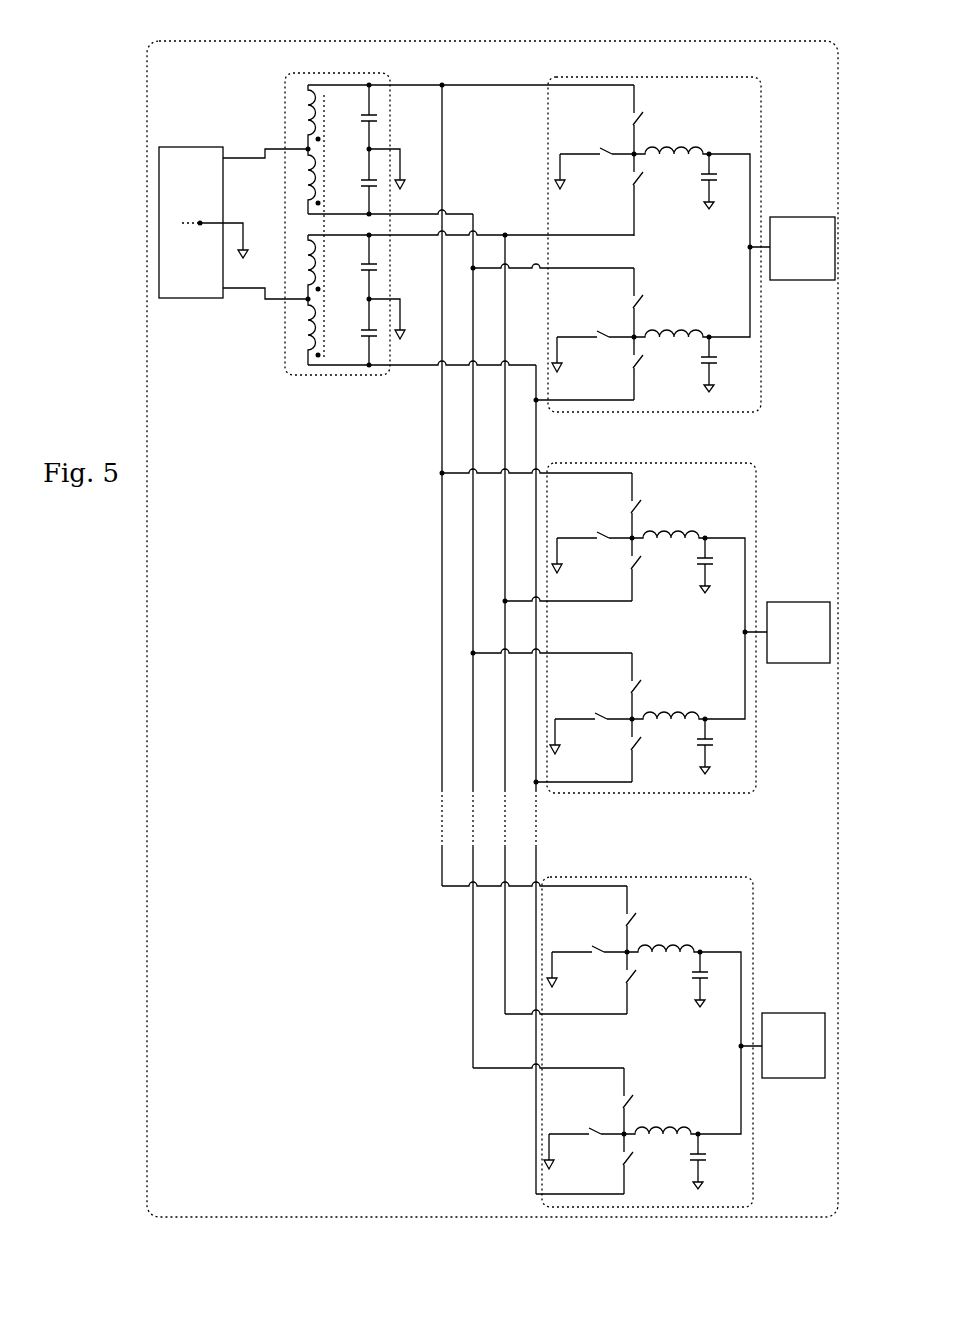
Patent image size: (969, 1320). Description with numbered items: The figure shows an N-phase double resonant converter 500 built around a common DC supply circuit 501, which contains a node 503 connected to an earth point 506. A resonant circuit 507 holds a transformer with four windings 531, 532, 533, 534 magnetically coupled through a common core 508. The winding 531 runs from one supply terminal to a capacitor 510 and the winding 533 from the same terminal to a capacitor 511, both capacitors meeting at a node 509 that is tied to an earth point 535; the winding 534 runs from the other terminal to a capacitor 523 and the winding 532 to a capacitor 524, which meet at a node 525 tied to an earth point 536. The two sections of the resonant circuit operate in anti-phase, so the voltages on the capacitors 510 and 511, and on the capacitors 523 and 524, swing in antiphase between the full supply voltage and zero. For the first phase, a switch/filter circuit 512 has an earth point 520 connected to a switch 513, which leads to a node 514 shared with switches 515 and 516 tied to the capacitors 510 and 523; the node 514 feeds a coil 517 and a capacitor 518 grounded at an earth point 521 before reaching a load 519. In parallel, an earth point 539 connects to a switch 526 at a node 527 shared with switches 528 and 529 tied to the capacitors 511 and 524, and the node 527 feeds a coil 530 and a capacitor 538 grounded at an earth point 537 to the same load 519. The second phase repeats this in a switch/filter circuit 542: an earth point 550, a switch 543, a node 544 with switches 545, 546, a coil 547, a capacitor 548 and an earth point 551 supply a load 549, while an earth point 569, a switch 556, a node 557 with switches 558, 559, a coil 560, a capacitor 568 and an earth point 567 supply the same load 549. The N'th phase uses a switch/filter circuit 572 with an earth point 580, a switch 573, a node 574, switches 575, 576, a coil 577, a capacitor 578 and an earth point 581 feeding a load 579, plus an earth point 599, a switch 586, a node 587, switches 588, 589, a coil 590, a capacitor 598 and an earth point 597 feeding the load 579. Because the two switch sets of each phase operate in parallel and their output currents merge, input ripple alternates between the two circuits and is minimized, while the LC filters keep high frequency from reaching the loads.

The N-phase double resonant converter 500 is at (490, 43).
The DC supply circuit 501 is at (191, 142).
The node 503 is at (200, 222).
The earth point 506 is at (244, 259).
The resonant circuit 507 is at (348, 69).
The core 508 is at (325, 234).
The node 509 is at (367, 151).
The capacitor 510 is at (364, 118).
The capacitor 511 is at (363, 184).
The switch/filter circuit 512 is at (655, 73).
The switch 513 is at (604, 150).
The node 514 is at (632, 156).
The switch 515 is at (637, 122).
The switch 516 is at (635, 184).
The coil 517 is at (682, 150).
The capacitor 518 is at (700, 178).
The load 519 is at (790, 217).
The earth point 520 is at (561, 190).
The earth point 521 is at (701, 208).
The capacitor 523 is at (363, 268).
The capacitor 524 is at (363, 334).
The node 525 is at (367, 301).
The switch 526 is at (604, 334).
The node 527 is at (632, 339).
The switch 528 is at (637, 306).
The switch 529 is at (635, 367).
The coil 530 is at (682, 334).
The winding 531 is at (310, 118).
The winding 532 is at (310, 336).
The winding 533 is at (310, 183).
The winding 534 is at (310, 270).
The earth point 535 is at (401, 190).
The earth point 536 is at (401, 340).
The earth point 537 is at (699, 393).
The capacitor 538 is at (699, 362).
The earth point 539 is at (558, 373).
The switch/filter circuit 542 is at (652, 458).
The switch 543 is at (602, 535).
The node 544 is at (630, 540).
The switch 545 is at (635, 505).
The switch 546 is at (633, 567).
The coil 547 is at (680, 535).
The capacitor 548 is at (696, 562).
The load 549 is at (787, 602).
The earth point 550 is at (558, 574).
The earth point 551 is at (696, 592).
The switch 556 is at (600, 716).
The node 557 is at (628, 721).
The switch 558 is at (635, 685).
The switch 559 is at (633, 748).
The coil 560 is at (678, 716).
The earth point 567 is at (695, 773).
The capacitor 568 is at (695, 743).
The earth point 569 is at (556, 755).
The switch/filter circuit 572 is at (645, 873).
The switch 573 is at (597, 949).
The node 574 is at (624, 954).
The switch 575 is at (630, 919).
The switch 576 is at (628, 980).
The coil 577 is at (675, 949).
The capacitor 578 is at (690, 976).
The load 579 is at (782, 1013).
The earth point 580 is at (553, 988).
The earth point 581 is at (690, 1008).
The switch 586 is at (594, 1131).
The node 587 is at (622, 1136).
The switch 588 is at (628, 1101).
The switch 589 is at (627, 1162).
The coil 590 is at (672, 1132).
The earth point 597 is at (688, 1188).
The capacitor 598 is at (689, 1157).
The earth point 599 is at (550, 1170).